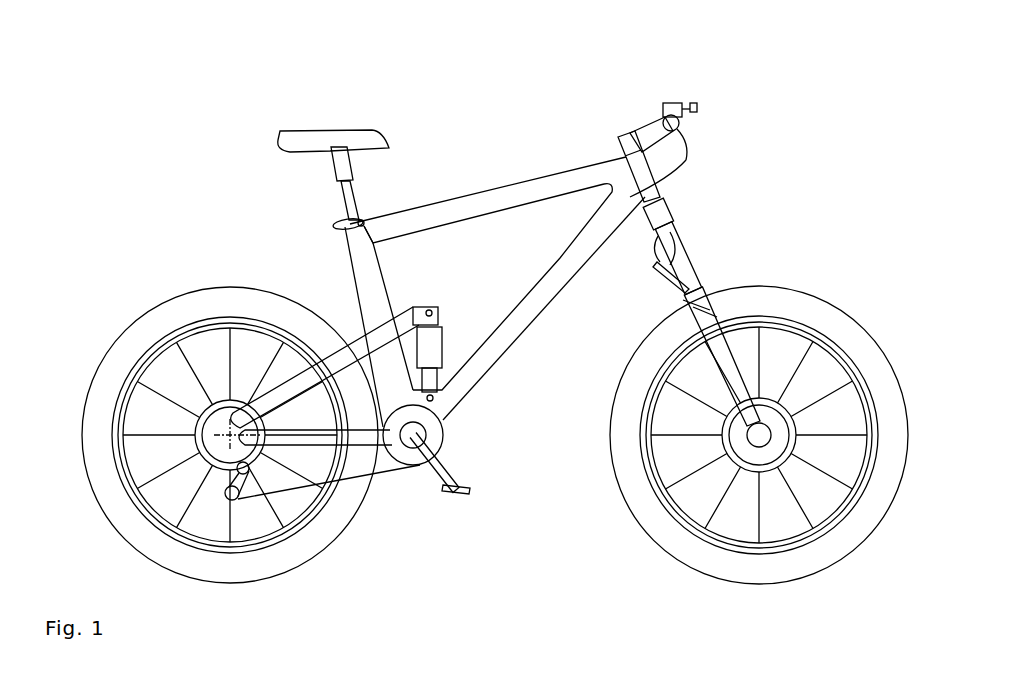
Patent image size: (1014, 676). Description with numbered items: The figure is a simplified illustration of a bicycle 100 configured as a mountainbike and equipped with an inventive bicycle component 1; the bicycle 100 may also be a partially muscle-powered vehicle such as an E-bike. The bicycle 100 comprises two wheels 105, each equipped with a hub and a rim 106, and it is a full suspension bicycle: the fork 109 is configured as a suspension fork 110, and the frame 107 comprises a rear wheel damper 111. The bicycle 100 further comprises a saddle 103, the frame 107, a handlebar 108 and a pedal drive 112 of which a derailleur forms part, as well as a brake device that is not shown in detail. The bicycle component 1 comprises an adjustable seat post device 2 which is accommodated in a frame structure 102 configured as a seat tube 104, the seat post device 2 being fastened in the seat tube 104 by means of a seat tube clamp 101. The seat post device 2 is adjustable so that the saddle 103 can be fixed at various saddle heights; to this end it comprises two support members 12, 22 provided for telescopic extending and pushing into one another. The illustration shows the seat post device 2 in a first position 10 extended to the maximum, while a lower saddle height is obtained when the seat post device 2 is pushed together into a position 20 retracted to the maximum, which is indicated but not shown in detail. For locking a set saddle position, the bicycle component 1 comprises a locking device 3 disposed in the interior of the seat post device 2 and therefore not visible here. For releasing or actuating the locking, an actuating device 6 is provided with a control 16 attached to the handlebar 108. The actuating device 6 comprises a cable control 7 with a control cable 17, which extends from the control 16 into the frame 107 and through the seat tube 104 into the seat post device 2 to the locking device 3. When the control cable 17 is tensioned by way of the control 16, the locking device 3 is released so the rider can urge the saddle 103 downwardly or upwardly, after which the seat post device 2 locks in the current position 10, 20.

The bicycle component 1 is at (83, 70).
The bicycle 100 is at (112, 130).
The first position 10 is at (253, 132).
The retracted position 20 is at (253, 190).
The seat post device 2 is at (388, 146).
The locking device 3 is at (343, 168).
The support member 22 is at (331, 153).
The support member 12 is at (340, 205).
The seat tube clamp 101 is at (333, 224).
The frame structure 102 is at (350, 245).
The saddle 103 is at (333, 143).
The seat tube 104 is at (363, 262).
The wheel 105 is at (128, 322).
The rim 106 is at (136, 356).
The frame 107 is at (578, 167).
The handlebar 108 is at (664, 116).
The actuating device 6 is at (705, 87).
The control 16 is at (698, 108).
The cable control 7 is at (695, 145).
The control cable 17 is at (690, 162).
The fork 109 is at (705, 243).
The suspension fork 110 is at (690, 285).
The rear wheel damper 111 is at (433, 342).
The pedal drive 112 is at (470, 490).